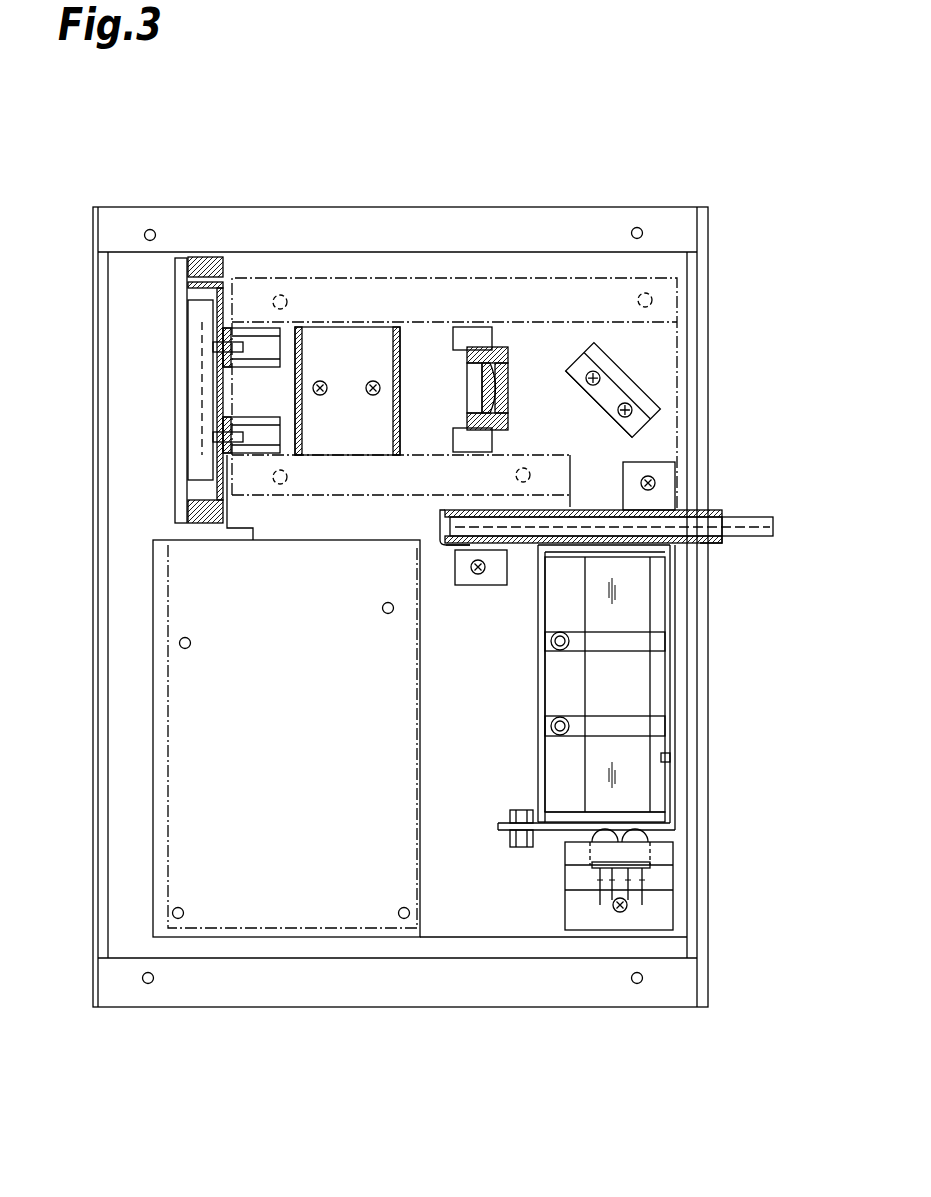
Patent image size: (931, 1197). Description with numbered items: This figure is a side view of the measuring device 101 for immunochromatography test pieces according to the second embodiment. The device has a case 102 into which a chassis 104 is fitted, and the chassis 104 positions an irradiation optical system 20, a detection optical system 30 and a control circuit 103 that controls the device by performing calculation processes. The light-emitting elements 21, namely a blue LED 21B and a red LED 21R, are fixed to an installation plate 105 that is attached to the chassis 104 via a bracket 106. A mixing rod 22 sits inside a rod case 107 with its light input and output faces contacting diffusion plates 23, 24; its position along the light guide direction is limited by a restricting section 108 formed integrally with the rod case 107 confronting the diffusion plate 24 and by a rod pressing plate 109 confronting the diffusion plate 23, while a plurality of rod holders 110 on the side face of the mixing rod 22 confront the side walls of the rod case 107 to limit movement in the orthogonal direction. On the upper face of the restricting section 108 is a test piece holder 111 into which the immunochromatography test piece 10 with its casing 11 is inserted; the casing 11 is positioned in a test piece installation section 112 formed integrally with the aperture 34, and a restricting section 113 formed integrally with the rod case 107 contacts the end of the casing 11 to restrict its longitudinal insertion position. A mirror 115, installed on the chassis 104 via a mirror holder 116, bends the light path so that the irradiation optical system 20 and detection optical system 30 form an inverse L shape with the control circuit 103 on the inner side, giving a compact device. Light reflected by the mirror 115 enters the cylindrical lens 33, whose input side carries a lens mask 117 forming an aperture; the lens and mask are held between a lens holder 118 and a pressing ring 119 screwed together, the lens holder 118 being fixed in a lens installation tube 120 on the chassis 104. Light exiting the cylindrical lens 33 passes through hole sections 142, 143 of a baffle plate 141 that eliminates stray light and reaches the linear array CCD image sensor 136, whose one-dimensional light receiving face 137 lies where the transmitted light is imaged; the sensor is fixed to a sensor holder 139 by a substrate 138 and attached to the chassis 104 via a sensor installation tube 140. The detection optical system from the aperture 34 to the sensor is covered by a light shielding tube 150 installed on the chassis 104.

The measuring device 101 is at (712, 160).
The case 102 is at (255, 207).
The control circuit 103 is at (258, 937).
The chassis 104 is at (465, 937).
The installation plate 105 is at (655, 868).
The bracket 106 is at (590, 930).
The rod case 107 is at (537, 757).
The restricting section 108 is at (527, 553).
The rod pressing plate 109 is at (538, 835).
The rod holders 110 is at (650, 640).
The test piece holder 111 is at (722, 495).
The test piece installation section 112 is at (713, 544).
The restricting section 113 is at (440, 527).
The mirror 115 is at (612, 375).
The mirror holder 116 is at (600, 405).
The lens mask 117 is at (505, 398).
The lens holder 118 is at (500, 350).
The pressing ring 119 is at (462, 367).
The lens installation tube 120 is at (475, 330).
The linear array CCD image sensor 136 is at (195, 335).
The light receiving face 137 is at (200, 430).
The substrate 138 is at (175, 280).
The sensor holder 139 is at (205, 258).
The sensor installation tube 140 is at (245, 460).
The baffle plate 141 is at (335, 350).
The hole section 142 is at (398, 392).
The hole section 143 is at (318, 400).
The light shielding tube 150 is at (580, 278).
The immunochromatography test piece 10 is at (458, 543).
The casing 11 is at (770, 528).
The irradiation optical system 20 is at (508, 712).
The light-emitting elements 21 is at (757, 826).
The red LED 21R is at (610, 832).
The blue LED 21B is at (640, 845).
The mixing rod 22 is at (618, 680).
The diffusion plate 23 is at (563, 815).
The diffusion plate 24 is at (654, 553).
The detection optical system 30 is at (456, 308).
The cylindrical lens 33 is at (508, 372).
The aperture 34 is at (725, 512).